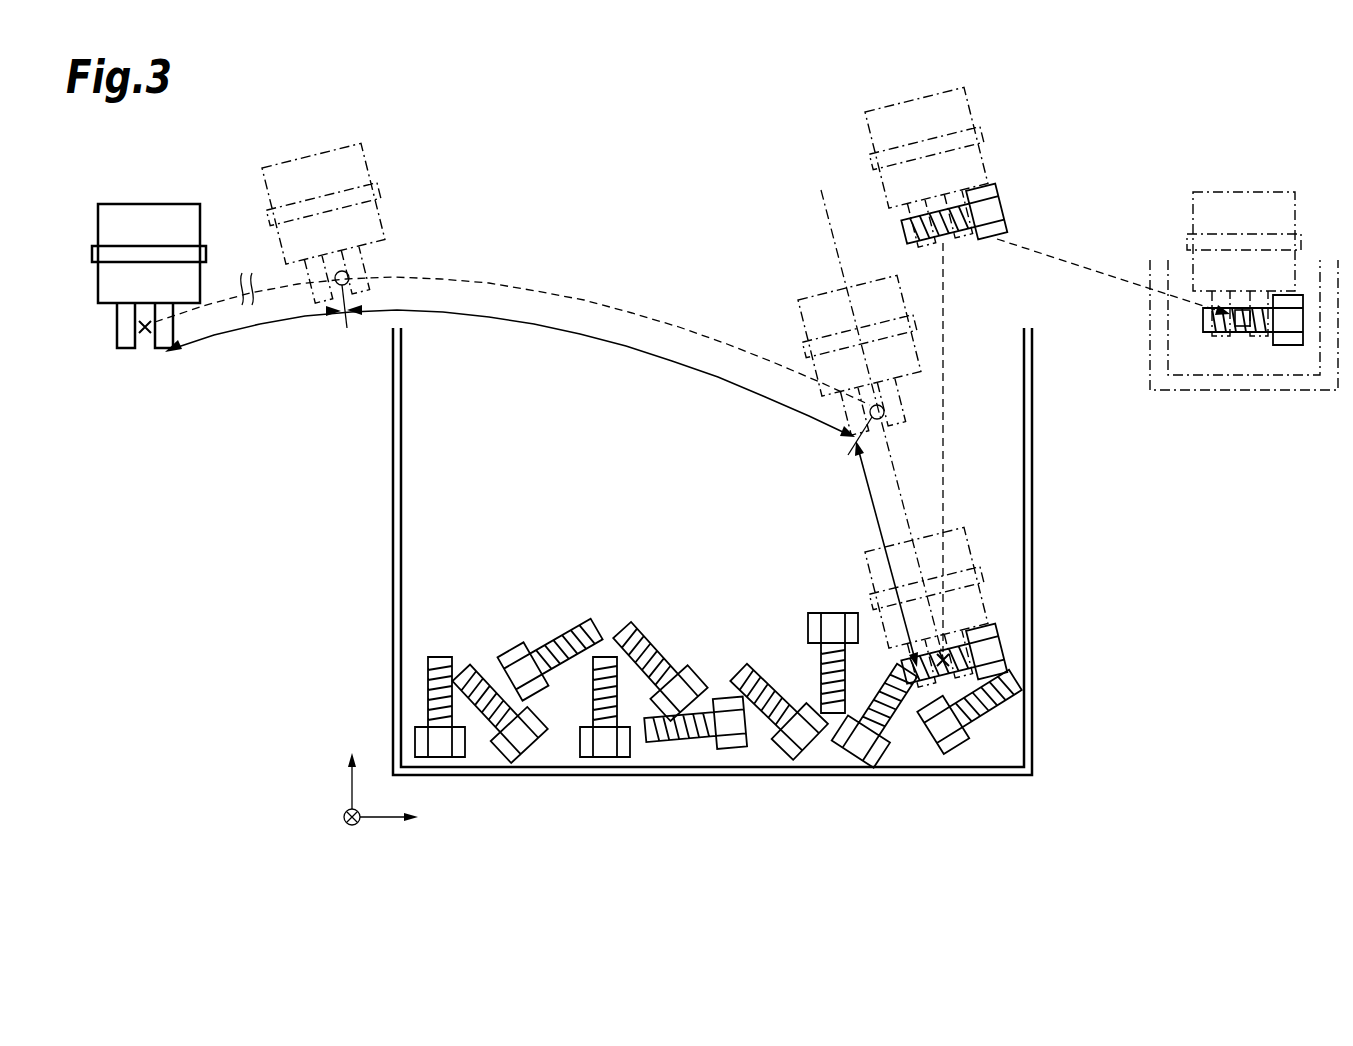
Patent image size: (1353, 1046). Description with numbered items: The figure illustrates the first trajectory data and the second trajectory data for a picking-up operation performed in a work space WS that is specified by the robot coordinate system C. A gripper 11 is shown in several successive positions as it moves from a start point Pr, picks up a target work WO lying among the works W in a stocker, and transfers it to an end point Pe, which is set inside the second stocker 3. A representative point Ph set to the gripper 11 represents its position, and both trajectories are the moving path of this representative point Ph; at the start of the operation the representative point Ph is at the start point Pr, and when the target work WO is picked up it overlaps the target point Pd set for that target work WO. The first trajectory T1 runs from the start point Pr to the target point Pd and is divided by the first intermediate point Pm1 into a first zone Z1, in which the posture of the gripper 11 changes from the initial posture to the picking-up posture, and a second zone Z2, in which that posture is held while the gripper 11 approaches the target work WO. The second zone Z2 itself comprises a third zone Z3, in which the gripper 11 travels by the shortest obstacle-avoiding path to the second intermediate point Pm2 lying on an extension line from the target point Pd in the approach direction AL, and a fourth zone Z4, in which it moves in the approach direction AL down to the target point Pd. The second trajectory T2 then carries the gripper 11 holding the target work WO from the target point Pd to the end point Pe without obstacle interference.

The gripper 11 is at (150, 203).
The second stocker 3 is at (1293, 390).
The work space WS is at (527, 152).
The work W is at (703, 672).
The target work WO is at (1002, 655).
The target point Pd is at (947, 683).
The end point Pe is at (1243, 333).
The first intermediate point Pm1 is at (350, 280).
The second intermediate point Pm2 is at (884, 412).
The start point Pr is at (146, 376).
The representative point Ph is at (148, 345).
The first trajectory T1 is at (540, 283).
The second trajectory T2 is at (1100, 270).
The first zone Z1 is at (243, 328).
The second zone Z2 is at (589, 488).
The third zone Z3 is at (578, 338).
The fourth zone Z4 is at (870, 505).
The approach direction AL is at (822, 222).
The robot coordinate system C is at (348, 845).